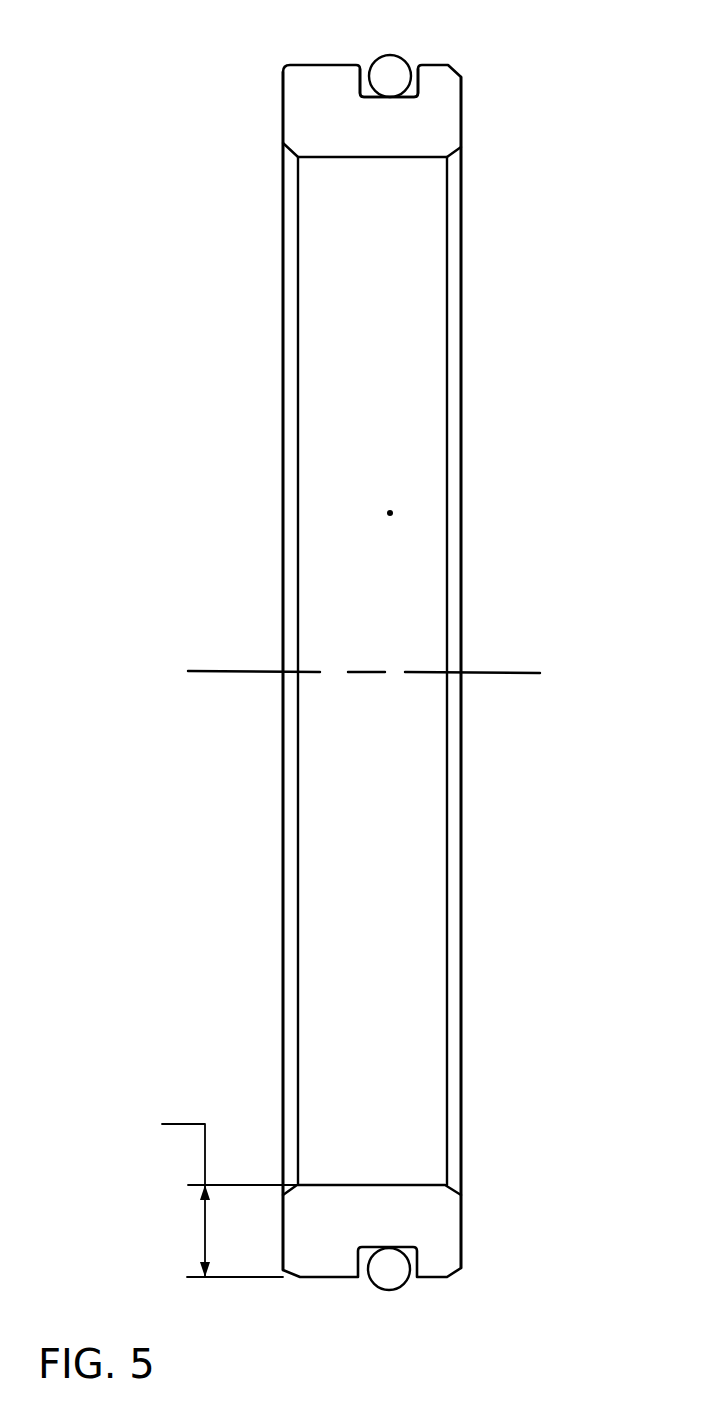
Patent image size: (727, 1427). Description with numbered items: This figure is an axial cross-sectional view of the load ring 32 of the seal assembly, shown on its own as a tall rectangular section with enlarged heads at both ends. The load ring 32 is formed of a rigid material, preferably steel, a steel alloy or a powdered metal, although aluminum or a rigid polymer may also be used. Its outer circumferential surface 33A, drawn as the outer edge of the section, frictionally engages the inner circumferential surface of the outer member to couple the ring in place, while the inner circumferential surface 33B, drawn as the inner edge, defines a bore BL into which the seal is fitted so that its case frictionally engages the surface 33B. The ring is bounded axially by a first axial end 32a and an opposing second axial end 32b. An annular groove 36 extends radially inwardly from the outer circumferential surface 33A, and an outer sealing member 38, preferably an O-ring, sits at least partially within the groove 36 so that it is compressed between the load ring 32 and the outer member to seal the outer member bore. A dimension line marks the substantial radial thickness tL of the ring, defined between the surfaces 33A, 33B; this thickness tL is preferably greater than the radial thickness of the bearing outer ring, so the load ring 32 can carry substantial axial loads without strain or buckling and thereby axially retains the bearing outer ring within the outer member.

The load ring 32 is at (346, 646).
The first axial end 32a is at (461, 345).
The second axial end 32b is at (283, 345).
The outer circumferential surface 33A is at (318, 65).
The inner circumferential surface 33B is at (410, 220).
The annular groove 36 is at (377, 92).
The outer sealing member 38 is at (392, 63).
The bore BL is at (390, 513).
The radial thickness tL is at (218, 1192).